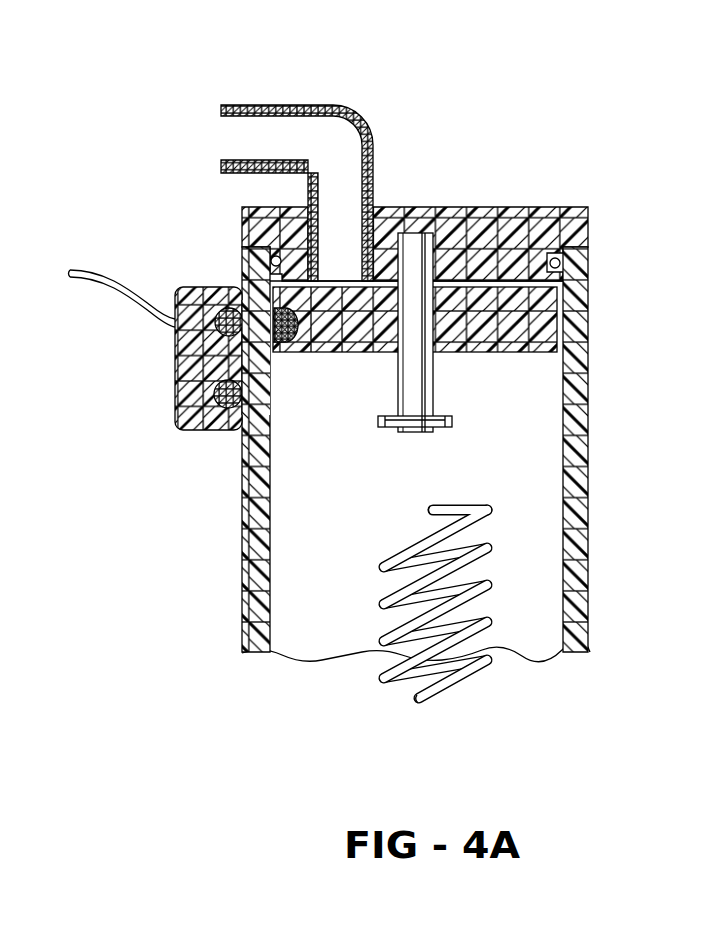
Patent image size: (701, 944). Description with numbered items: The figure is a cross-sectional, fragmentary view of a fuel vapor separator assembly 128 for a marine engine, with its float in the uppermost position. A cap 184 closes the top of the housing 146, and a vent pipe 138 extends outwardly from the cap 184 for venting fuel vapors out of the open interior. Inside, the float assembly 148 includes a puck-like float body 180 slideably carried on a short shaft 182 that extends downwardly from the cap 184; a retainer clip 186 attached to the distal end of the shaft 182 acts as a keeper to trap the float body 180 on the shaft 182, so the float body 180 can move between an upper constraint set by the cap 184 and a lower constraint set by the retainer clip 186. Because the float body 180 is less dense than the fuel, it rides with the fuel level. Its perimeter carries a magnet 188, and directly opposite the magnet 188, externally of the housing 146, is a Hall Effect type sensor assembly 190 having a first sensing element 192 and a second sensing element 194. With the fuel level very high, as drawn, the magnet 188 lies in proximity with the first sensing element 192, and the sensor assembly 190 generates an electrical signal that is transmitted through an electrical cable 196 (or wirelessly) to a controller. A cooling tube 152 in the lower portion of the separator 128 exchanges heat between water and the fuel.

The fuel vapor separator assembly 128 is at (170, 108).
The vent pipe 138 is at (282, 104).
The housing 146 is at (256, 638).
The float assembly 148 is at (564, 313).
The cooling tube 152 is at (468, 680).
The float body 180 is at (468, 328).
The shaft 182 is at (418, 368).
The cap 184 is at (478, 206).
The retainer clip 186 is at (378, 427).
The magnet 188 is at (290, 343).
The sensor assembly 190 is at (168, 442).
The first sensing element 192 is at (223, 312).
The second sensing element 194 is at (212, 393).
The electrical cable 196 is at (95, 264).